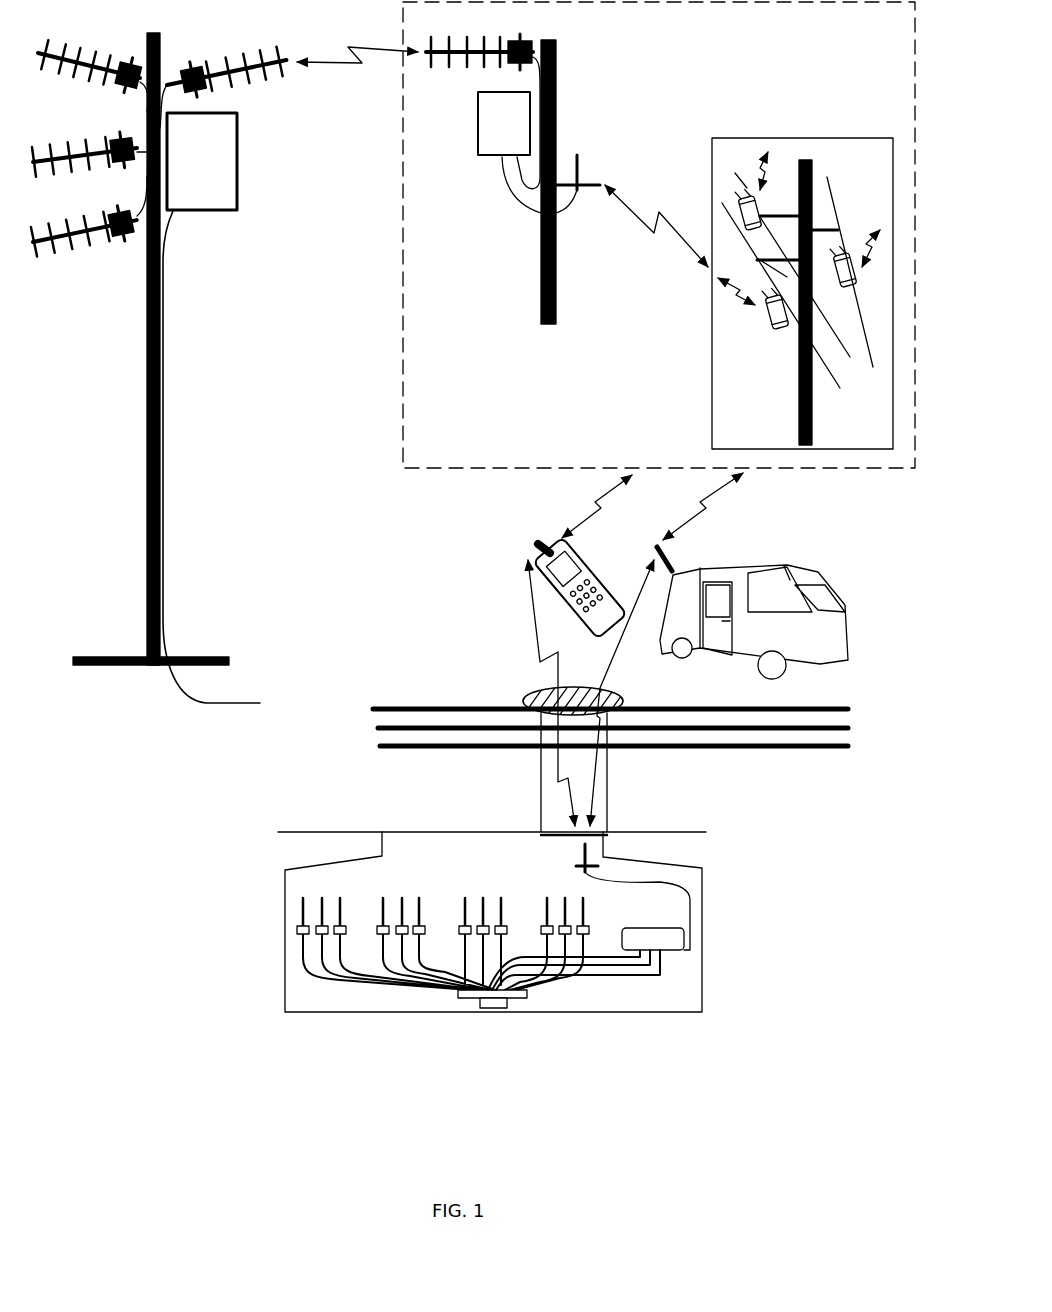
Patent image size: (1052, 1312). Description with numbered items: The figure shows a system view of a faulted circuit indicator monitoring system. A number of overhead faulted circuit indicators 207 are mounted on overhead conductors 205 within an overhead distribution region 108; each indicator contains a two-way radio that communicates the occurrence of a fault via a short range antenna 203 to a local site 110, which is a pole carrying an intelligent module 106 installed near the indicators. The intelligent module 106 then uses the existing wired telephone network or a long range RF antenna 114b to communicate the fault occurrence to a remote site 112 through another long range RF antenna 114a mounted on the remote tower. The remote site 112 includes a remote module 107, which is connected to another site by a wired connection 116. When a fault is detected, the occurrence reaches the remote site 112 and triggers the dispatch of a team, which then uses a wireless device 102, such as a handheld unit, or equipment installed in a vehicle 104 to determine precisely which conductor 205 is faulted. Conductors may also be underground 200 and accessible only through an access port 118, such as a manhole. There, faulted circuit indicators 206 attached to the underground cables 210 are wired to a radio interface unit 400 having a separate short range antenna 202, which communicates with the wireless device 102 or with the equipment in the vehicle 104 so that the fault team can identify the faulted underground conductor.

The wireless device 102 is at (578, 562).
The vehicle 104 is at (782, 566).
The intelligent module 106 is at (478, 156).
The remote module 107 is at (220, 211).
The overhead distribution system 108 is at (403, 458).
The local site 110 is at (541, 288).
The remote site 112 is at (147, 340).
The long range RF antenna 114a is at (283, 62).
The long range RF antenna 114b is at (430, 58).
The wired connection 116 is at (240, 705).
The access port 118 is at (532, 692).
The underground conductors 200 is at (285, 890).
The short range antenna 202 is at (578, 862).
The short range antenna 203 is at (582, 162).
The conductor 205 is at (830, 376).
The faulted circuit indicators 206 is at (344, 926).
The overhead faulted circuit indicators 207 is at (770, 330).
The underground power cables 210 is at (339, 902).
The radio interface unit 400 is at (630, 929).